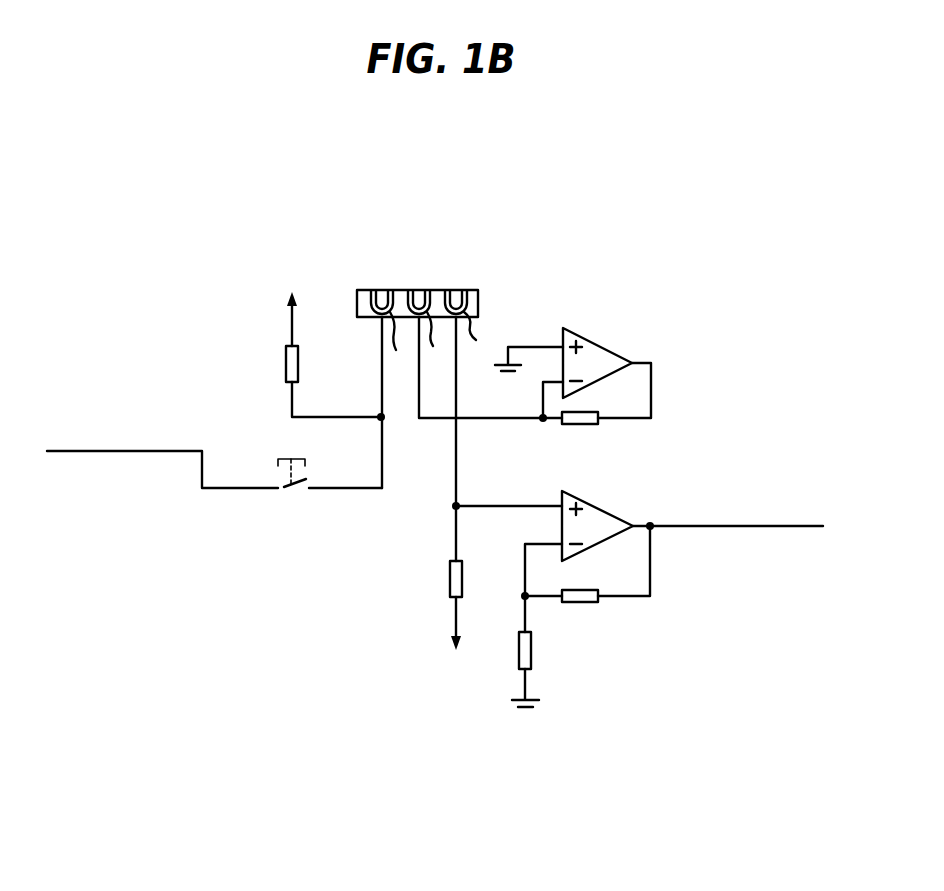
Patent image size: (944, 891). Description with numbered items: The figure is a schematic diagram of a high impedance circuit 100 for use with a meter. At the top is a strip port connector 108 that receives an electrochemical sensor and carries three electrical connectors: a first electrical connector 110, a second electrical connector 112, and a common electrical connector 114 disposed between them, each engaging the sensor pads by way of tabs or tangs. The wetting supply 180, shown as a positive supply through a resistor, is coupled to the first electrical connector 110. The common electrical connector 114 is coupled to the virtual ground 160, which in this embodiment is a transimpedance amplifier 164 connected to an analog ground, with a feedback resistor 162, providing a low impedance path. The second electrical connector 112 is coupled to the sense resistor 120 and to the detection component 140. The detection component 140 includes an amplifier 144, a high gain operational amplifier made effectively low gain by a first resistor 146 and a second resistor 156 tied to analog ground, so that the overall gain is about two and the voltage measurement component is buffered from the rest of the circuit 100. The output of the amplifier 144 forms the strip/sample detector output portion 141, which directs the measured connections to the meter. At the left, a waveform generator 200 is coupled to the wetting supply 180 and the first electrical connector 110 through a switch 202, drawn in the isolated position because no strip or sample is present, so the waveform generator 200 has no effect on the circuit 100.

The circuit 100 is at (645, 208).
The strip port connector 108 is at (426, 351).
The first electrical connector 110 is at (377, 288).
The second electrical connector 112 is at (459, 288).
The common electrical connector 114 is at (421, 288).
The sense resistor 120 is at (412, 594).
The detection component 140 is at (634, 602).
The strip/sample detector output portion 141 is at (752, 523).
The amplifier 144 is at (608, 511).
The first resistor 146 is at (579, 603).
The second resistor 156 is at (520, 660).
The virtual ground 160 is at (612, 370).
The resistor 162 is at (579, 426).
The transimpedance amplifier 164 is at (619, 354).
The wetting supply 180 is at (226, 332).
The waveform generator 200 is at (120, 449).
The switch 202 is at (303, 481).